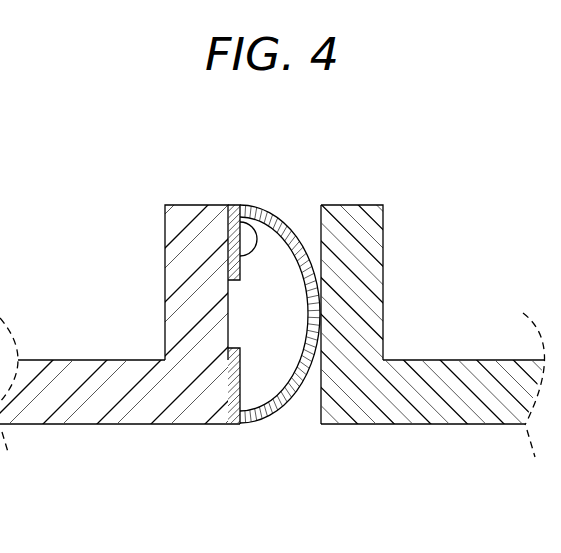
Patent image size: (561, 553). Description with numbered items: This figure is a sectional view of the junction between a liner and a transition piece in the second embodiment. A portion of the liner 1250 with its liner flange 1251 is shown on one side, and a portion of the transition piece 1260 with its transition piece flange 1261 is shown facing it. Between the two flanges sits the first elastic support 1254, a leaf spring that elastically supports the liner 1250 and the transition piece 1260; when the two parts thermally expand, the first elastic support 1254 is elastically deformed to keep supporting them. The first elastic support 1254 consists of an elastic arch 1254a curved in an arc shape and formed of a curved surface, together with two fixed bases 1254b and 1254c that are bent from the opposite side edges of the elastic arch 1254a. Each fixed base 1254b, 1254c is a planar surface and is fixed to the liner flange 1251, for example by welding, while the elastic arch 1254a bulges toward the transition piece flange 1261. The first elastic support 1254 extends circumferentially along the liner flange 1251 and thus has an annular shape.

The liner 1250 is at (122, 432).
The liner flange 1251 is at (165, 247).
The first elastic support 1254 is at (290, 217).
The elastic arch 1254a is at (285, 388).
The fixed base 1254b is at (253, 215).
The fixed base 1254c is at (238, 378).
The transition piece 1260 is at (422, 434).
The transition piece flange 1261 is at (384, 245).